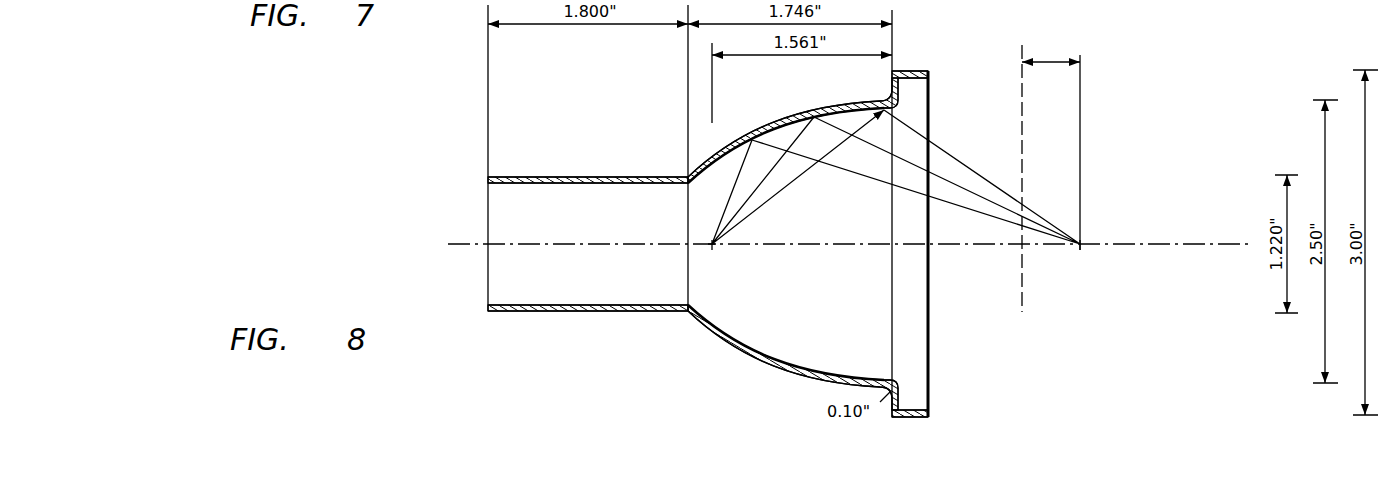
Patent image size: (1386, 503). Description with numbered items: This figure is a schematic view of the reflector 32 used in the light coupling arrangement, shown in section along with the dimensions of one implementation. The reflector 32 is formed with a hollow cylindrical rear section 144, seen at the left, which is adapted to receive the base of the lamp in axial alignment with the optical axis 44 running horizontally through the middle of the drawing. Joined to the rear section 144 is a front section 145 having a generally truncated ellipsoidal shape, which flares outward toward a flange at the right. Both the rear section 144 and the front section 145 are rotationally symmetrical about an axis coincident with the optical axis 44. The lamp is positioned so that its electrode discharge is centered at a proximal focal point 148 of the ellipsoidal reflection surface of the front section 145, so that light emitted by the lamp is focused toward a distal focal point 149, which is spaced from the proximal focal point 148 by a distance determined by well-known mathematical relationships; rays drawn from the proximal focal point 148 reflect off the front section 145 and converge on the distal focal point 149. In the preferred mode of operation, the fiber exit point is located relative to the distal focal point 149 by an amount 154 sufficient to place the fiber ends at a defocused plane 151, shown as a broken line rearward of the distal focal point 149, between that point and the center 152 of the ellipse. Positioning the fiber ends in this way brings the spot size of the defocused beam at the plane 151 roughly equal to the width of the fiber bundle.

The reflector 32 is at (738, 356).
The optical axis 44 is at (1188, 243).
The hollow cylindrical rear section 144 is at (566, 312).
The front section 145 is at (825, 385).
The proximal focal point 148 is at (712, 244).
The distal focal point 149 is at (1080, 244).
The defocused plane 151 is at (1022, 281).
The center of the ellipse 152 is at (892, 244).
The amount 154 is at (1041, 60).